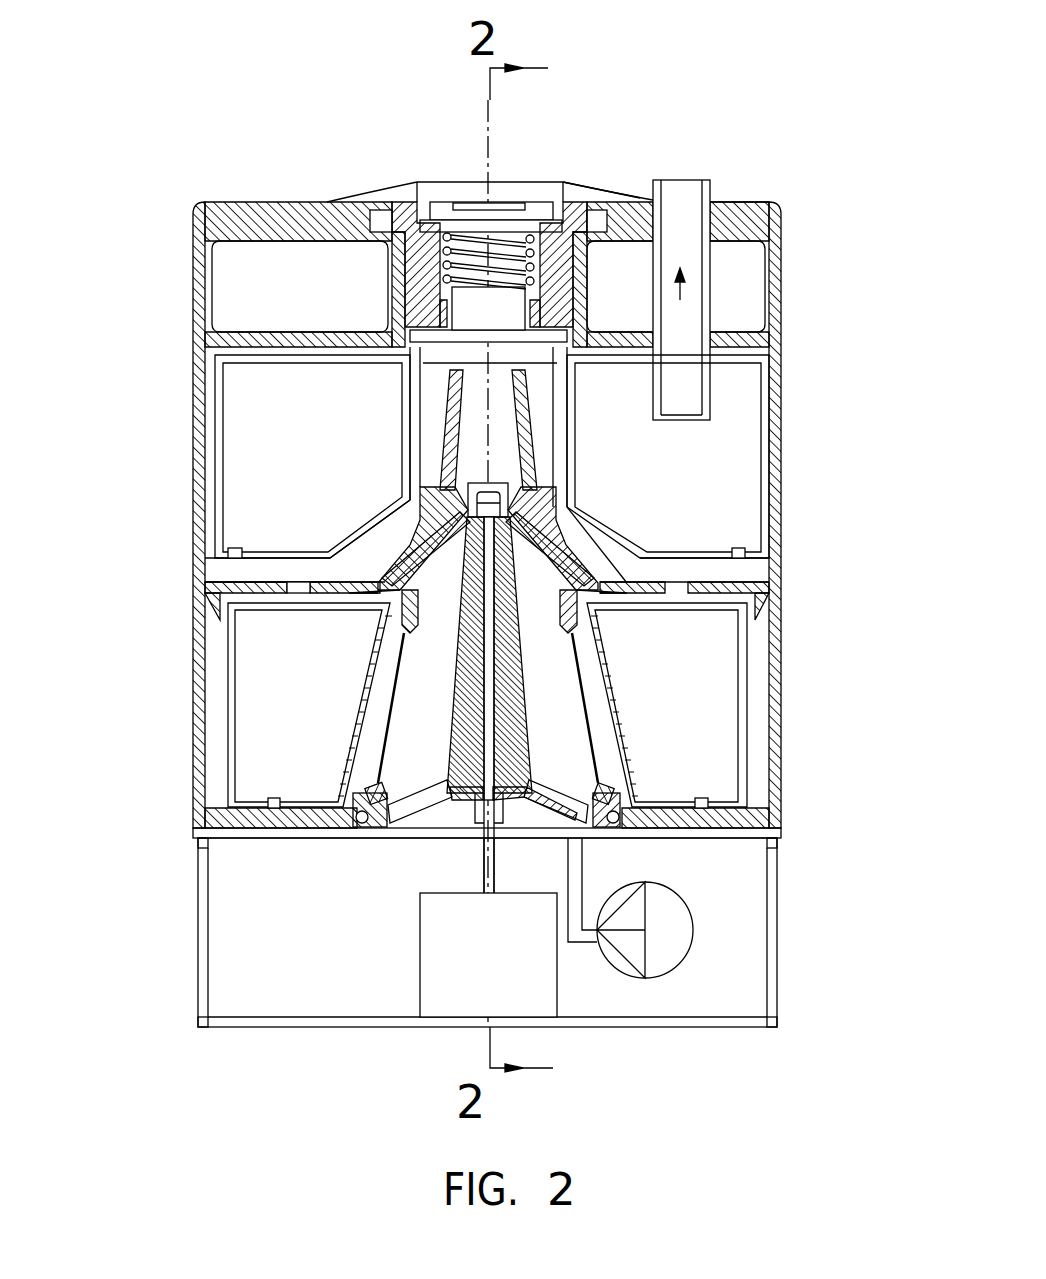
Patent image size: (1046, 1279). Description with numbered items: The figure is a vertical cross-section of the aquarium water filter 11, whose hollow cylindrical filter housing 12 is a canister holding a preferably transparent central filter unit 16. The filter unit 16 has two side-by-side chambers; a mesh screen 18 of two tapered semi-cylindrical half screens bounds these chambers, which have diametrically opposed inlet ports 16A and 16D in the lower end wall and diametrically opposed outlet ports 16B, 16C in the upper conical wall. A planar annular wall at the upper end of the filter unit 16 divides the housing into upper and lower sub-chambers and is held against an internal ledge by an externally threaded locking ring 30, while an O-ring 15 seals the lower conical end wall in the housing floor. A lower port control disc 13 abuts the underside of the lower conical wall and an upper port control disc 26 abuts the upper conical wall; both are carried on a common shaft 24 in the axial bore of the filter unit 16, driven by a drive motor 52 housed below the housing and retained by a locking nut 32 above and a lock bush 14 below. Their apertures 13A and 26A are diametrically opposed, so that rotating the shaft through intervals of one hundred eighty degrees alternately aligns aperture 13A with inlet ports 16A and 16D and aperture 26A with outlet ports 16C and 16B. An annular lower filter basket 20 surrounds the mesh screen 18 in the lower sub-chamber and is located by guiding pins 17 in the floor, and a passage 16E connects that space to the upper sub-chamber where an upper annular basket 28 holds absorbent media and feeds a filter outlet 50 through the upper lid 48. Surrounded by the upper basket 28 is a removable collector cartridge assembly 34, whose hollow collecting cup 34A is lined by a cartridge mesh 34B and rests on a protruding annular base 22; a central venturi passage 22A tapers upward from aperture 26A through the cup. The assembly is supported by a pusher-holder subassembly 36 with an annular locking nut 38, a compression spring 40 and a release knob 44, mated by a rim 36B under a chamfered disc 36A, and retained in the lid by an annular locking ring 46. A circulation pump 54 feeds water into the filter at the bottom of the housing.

The aquarium water filter 11 is at (850, 784).
The filter housing 12 is at (193, 462).
The lower port control disc 13 is at (465, 800).
The port control aperture 13A is at (415, 812).
The lock bush 14 is at (503, 813).
The O-ring 15 is at (635, 793).
The central filter unit 16 is at (520, 692).
The inlet port 16A is at (420, 797).
The outlet port 16B is at (467, 570).
The outlet port 16C is at (517, 567).
The inlet port 16D is at (557, 790).
The passage 16E is at (296, 593).
The guiding pins 17 is at (702, 798).
The mesh screen 18 is at (392, 694).
The lower filter basket 20 is at (690, 672).
The protruding annular base 22 is at (607, 558).
The central venturi passage 22A is at (488, 427).
The shaft 24 is at (467, 583).
The upper port control disc 26 is at (453, 527).
The port control aperture 26A is at (520, 523).
The upper annular basket 28 is at (300, 452).
The locking ring 30 is at (273, 580).
The locking nut 32 is at (503, 482).
The collector cartridge assembly 34 is at (450, 402).
The hollow collecting cup 34A is at (420, 463).
The cartridge mesh 34B is at (558, 400).
The pusher-holder subassembly 36 is at (495, 297).
The chamfered disc 36A is at (390, 317).
The rim 36B is at (387, 337).
The annular locking nut 38 is at (537, 307).
The compression spring 40 is at (467, 233).
The release knob 44 is at (538, 203).
The annular locking ring 46 is at (597, 182).
The upper lid 48 is at (767, 202).
The filter outlet 50 is at (710, 302).
The drive motor 52 is at (418, 953).
The circulation pump 54 is at (695, 948).